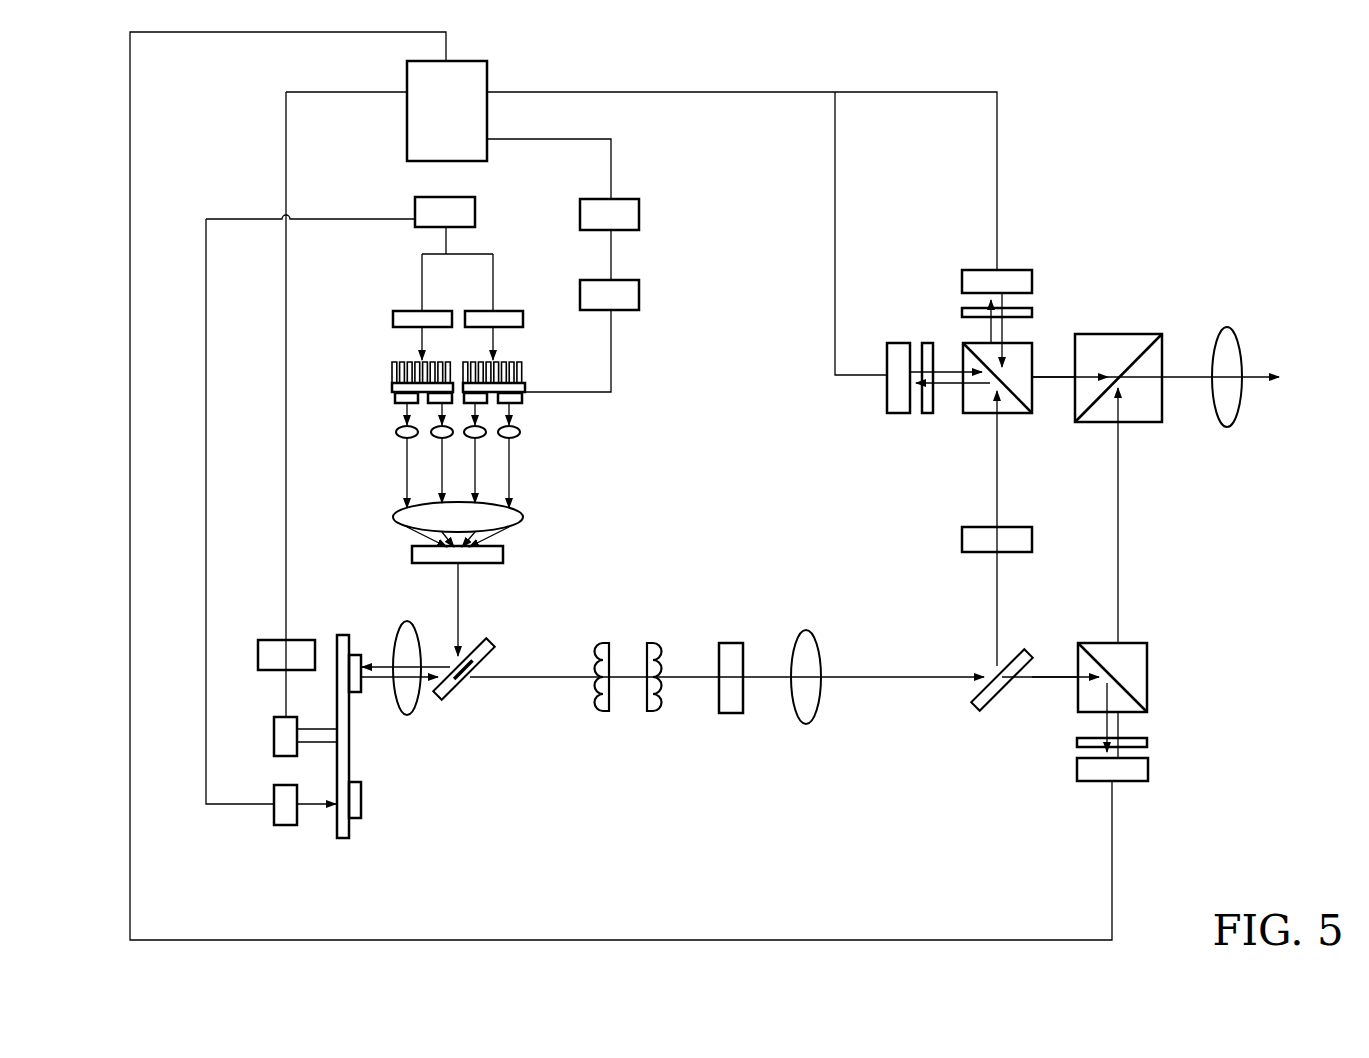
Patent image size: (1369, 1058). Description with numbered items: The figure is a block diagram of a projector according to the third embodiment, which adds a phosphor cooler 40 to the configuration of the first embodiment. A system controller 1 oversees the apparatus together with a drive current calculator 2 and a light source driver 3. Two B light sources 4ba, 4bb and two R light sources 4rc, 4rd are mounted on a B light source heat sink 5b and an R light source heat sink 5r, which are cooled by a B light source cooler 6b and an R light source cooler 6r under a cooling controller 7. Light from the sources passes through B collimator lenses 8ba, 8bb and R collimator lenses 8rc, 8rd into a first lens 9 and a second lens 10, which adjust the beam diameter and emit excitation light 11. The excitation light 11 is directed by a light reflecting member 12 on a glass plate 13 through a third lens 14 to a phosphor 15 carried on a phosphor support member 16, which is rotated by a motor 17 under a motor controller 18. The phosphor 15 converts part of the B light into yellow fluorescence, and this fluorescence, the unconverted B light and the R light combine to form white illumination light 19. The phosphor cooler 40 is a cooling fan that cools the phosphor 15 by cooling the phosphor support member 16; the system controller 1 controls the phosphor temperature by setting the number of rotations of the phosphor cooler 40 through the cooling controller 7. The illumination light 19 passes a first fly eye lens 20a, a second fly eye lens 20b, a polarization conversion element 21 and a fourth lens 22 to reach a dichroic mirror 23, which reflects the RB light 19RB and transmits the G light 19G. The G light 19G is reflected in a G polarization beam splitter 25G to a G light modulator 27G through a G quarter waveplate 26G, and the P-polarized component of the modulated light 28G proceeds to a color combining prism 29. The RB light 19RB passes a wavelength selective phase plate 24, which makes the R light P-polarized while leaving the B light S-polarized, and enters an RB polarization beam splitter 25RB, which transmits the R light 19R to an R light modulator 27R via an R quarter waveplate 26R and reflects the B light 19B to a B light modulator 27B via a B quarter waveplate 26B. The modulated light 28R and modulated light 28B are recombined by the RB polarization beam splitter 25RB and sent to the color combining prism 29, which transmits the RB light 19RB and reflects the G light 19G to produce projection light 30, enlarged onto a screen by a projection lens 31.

The system controller 1 is at (478, 79).
The drive current calculator 2 is at (595, 207).
The light source driver 3 is at (596, 290).
The B light source 4ba is at (396, 398).
The B light source 4bb is at (430, 401).
The R light source 4rc is at (486, 402).
The R light source 4rd is at (522, 399).
The B light source heat sink 5b is at (392, 382).
The R light source heat sink 5r is at (526, 384).
The B light source cooler 6b is at (412, 320).
The R light source cooler 6r is at (508, 320).
The cooling controller 7 is at (430, 205).
The B collimator lens 8ba is at (396, 432).
The B collimator lens 8bb is at (434, 437).
The R collimator lens 8rc is at (467, 437).
The R collimator lens 8rd is at (518, 436).
The first lens 9 is at (510, 526).
The second lens 10 is at (412, 554).
The excitation light 11 is at (466, 589).
The light reflecting member 12 is at (462, 696).
The glass plate 13 is at (452, 702).
The third lens 14 is at (404, 700).
The phosphor 15 is at (350, 654).
The phosphor support member 16 is at (342, 640).
The motor 17 is at (286, 737).
The motor controller 18 is at (282, 656).
The illumination light 19 is at (378, 686).
The B light 19B is at (950, 388).
The G light 19G is at (1054, 672).
The R light 19R is at (986, 300).
The RB light 19RB is at (996, 585).
The first fly eye lens 20a is at (603, 707).
The second fly eye lens 20b is at (653, 643).
The polarization conversion element 21 is at (731, 706).
The fourth lens 22 is at (805, 706).
The dichroic mirror 23 is at (980, 708).
The wavelength selective phase plate 24 is at (976, 540).
The G polarization beam splitter 25G is at (1138, 672).
The RB polarization beam splitter 25RB is at (1014, 406).
The B quarter waveplate 26B is at (928, 415).
The G quarter waveplate 26G is at (1085, 742).
The R quarter waveplate 26R is at (1030, 306).
The B light modulator 27B is at (896, 415).
The G light modulator 27G is at (1133, 770).
The R light modulator 27R is at (1016, 282).
The modulated light 28B is at (952, 370).
The modulated light 28G is at (1123, 722).
The modulated light 28R is at (1005, 330).
The color combining prism 29 is at (1108, 352).
The projection light 30 is at (1185, 372).
The projection lens 31 is at (1232, 420).
The phosphor cooler 40 is at (290, 815).